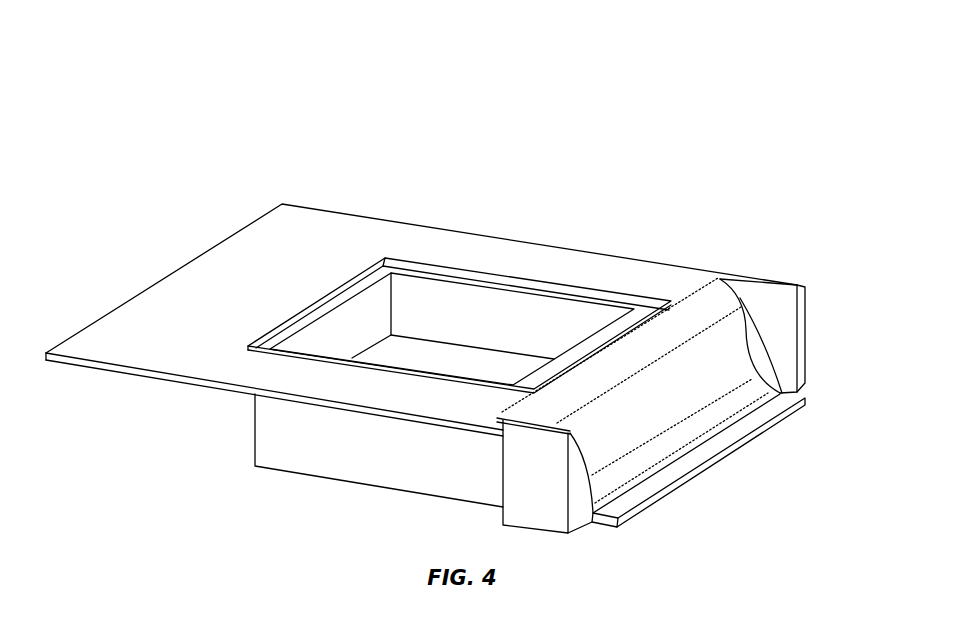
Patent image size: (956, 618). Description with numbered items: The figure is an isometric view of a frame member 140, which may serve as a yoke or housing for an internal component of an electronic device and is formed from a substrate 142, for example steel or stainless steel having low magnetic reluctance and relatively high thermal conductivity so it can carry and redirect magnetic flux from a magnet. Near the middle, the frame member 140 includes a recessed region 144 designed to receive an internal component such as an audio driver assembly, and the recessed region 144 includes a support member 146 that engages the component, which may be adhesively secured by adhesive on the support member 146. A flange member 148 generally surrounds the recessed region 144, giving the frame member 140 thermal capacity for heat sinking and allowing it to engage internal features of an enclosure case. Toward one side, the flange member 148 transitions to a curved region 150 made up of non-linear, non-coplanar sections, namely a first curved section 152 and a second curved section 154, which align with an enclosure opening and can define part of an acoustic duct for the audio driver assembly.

The frame member 140 is at (454, 288).
The substrate 142 is at (437, 227).
The recessed region 144 is at (547, 275).
The support member 146 is at (381, 272).
The flange member 148 is at (125, 290).
The curved region 150 is at (768, 303).
The first curved section 152 is at (707, 307).
The second curved section 154 is at (753, 393).